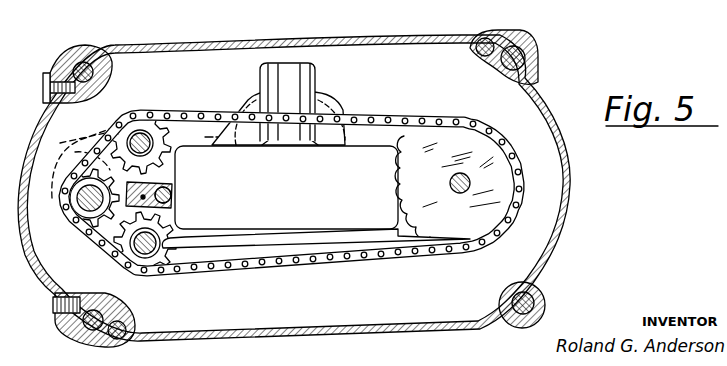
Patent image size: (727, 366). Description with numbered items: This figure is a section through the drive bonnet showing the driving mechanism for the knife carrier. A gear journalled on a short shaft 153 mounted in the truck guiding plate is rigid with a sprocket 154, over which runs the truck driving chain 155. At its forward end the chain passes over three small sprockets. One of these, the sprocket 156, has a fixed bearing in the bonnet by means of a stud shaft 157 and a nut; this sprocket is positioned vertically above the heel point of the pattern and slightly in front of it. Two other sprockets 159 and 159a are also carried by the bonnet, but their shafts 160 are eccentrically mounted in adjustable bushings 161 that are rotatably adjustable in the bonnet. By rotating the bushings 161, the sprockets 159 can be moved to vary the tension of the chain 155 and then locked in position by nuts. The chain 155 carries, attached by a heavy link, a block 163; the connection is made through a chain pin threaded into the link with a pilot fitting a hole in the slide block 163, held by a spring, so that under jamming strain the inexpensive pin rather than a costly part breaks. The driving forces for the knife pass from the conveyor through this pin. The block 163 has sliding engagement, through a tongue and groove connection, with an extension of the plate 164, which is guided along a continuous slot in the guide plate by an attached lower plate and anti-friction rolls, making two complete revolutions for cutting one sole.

The short shaft 153 is at (461, 194).
The sprocket 154 is at (490, 146).
The truck driving chain 155 is at (258, 267).
The small sprocket 156 is at (88, 231).
The stud shaft 157 is at (86, 205).
The sprocket 159 is at (163, 272).
The sprocket 159a is at (189, 112).
The shaft 160 is at (152, 243).
The adjustable bushing 161 is at (130, 264).
The block 163 is at (288, 102).
The plate 164 is at (318, 68).